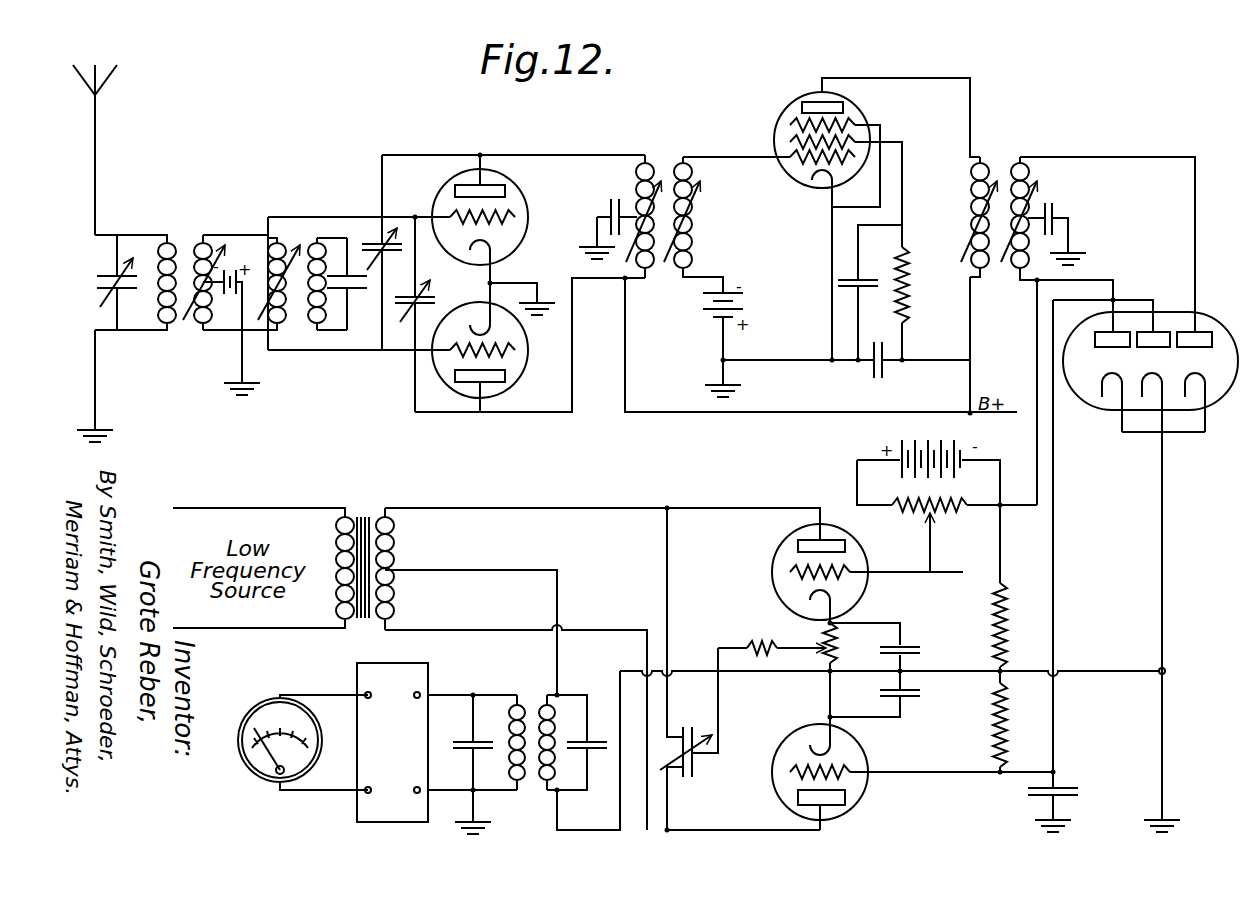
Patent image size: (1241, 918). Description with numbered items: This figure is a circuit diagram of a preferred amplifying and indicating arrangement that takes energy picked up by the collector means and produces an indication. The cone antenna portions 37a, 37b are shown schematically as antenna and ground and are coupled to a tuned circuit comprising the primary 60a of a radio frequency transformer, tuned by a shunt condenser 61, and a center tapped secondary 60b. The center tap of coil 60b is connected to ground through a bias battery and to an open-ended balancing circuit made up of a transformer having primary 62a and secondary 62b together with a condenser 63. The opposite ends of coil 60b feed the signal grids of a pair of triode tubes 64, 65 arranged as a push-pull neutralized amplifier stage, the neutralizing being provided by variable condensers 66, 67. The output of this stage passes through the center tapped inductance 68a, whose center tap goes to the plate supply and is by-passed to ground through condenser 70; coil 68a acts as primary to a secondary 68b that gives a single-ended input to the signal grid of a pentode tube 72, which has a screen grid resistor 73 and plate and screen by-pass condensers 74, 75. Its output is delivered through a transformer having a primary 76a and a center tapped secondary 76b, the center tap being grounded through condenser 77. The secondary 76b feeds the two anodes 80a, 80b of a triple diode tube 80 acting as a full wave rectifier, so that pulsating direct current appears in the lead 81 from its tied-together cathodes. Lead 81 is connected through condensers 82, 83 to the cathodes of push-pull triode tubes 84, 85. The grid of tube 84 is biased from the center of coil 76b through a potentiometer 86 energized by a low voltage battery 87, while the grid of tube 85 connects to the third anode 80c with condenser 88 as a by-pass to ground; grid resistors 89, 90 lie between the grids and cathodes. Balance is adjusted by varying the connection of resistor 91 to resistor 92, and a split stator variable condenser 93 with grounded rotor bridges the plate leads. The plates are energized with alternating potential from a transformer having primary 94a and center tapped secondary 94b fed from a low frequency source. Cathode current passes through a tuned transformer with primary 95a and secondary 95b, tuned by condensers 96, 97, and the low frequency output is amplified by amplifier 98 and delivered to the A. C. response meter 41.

The cone antenna portion 37a is at (95, 139).
The cone antenna portion 37b is at (95, 386).
The shunt condenser 61 is at (108, 274).
The primary of radio frequency transformer 60a is at (165, 236).
The center tapped secondary 60b is at (200, 234).
The primary of balancing radio frequency transformer 62a is at (281, 267).
The secondary of balancing radio frequency transformer 62b is at (314, 238).
The condenser 63 is at (350, 284).
The variable condenser 66 is at (385, 255).
The variable condenser 67 is at (432, 300).
The triode tube 64 is at (437, 190).
The triode tube 65 is at (528, 379).
The by-pass condenser 70 is at (611, 215).
The center tapped inductance 68a is at (645, 160).
The secondary coil 68b is at (683, 158).
The pentode tube 72 is at (865, 112).
The screen grid by-pass condenser 75 is at (862, 278).
The screen grid resistor 73 is at (912, 300).
The plate by-pass condenser 74 is at (884, 377).
The primary of output radio frequency transformer 76a is at (985, 160).
The center tapped secondary 76b is at (1025, 158).
The condenser 77 is at (1056, 211).
The triple diode tube 80 is at (1107, 412).
The anode 80a is at (1100, 337).
The anode 80b is at (1204, 333).
The third anode 80c is at (1158, 332).
The low voltage battery 87 is at (912, 447).
The potentiometer 86 is at (942, 512).
The grid resistor 89 is at (1003, 600).
The grid resistor 90 is at (1006, 720).
The condenser 88 is at (1062, 789).
The lead 81 is at (1162, 566).
The condenser 82 is at (912, 650).
The condenser 83 is at (920, 700).
The resistor 92 is at (838, 645).
The resistor 91 is at (757, 641).
The split stator variable condenser 93 is at (695, 766).
The triode tube 84 is at (772, 570).
The triode tube 85 is at (866, 801).
The transformer primary 94a is at (345, 508).
The center tapped secondary 94b is at (385, 508).
The amplifier 98 is at (430, 666).
The condenser 97 is at (468, 742).
The condenser 96 is at (588, 742).
The primary of tuned transformer 95a is at (545, 792).
The secondary of tuned transformer 95b is at (512, 790).
The A. C. response meter 41 is at (256, 705).